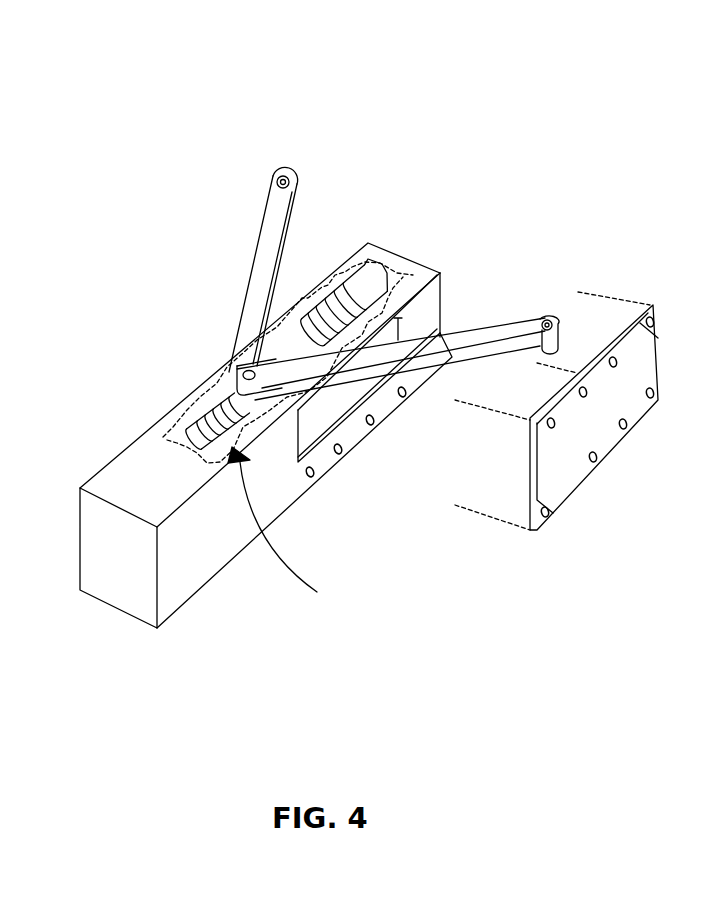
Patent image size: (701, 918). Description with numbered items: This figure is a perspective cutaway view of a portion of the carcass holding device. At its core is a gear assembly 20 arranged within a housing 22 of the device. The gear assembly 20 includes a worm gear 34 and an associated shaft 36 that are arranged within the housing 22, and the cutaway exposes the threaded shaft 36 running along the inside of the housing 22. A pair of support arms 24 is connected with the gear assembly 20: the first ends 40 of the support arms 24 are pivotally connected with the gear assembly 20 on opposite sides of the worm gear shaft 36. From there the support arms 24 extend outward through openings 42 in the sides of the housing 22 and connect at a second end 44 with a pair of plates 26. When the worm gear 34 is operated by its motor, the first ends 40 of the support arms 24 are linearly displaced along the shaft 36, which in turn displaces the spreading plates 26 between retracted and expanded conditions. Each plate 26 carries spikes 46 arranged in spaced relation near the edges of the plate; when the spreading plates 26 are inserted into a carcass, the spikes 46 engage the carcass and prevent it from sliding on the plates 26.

The gear assembly 20 is at (293, 530).
The housing 22 is at (137, 470).
The support arms 24 is at (267, 260).
The plates 26 is at (647, 363).
The worm gear 34 is at (215, 385).
The shaft 36 is at (367, 280).
The first ends 40 is at (280, 408).
The openings 42 is at (439, 272).
The second end 44 is at (278, 181).
The spikes 46 is at (554, 427).